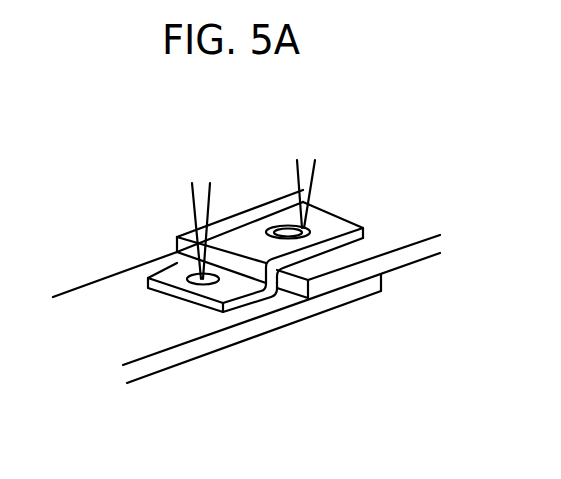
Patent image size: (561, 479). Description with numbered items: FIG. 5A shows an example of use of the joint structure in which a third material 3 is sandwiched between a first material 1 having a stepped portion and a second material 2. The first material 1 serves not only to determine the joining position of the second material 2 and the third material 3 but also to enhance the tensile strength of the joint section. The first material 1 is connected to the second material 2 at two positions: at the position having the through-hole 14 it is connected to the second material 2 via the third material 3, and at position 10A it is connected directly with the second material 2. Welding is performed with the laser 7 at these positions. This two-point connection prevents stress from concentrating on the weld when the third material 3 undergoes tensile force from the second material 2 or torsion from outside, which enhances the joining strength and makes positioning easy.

The first material 1 is at (245, 241).
The second material 2 is at (90, 300).
The third material 3 is at (393, 238).
The laser 7 is at (192, 204).
The position 10A is at (208, 281).
The through-hole 14 is at (291, 237).